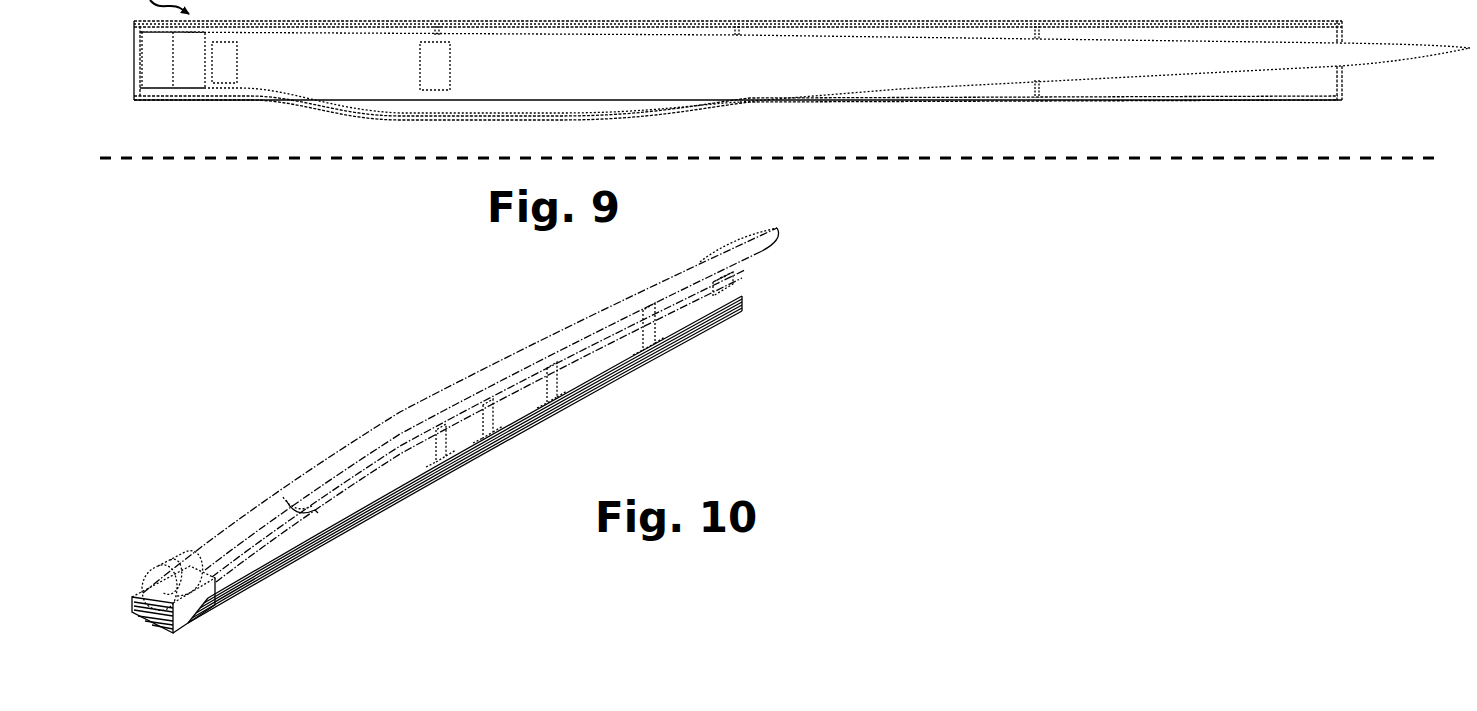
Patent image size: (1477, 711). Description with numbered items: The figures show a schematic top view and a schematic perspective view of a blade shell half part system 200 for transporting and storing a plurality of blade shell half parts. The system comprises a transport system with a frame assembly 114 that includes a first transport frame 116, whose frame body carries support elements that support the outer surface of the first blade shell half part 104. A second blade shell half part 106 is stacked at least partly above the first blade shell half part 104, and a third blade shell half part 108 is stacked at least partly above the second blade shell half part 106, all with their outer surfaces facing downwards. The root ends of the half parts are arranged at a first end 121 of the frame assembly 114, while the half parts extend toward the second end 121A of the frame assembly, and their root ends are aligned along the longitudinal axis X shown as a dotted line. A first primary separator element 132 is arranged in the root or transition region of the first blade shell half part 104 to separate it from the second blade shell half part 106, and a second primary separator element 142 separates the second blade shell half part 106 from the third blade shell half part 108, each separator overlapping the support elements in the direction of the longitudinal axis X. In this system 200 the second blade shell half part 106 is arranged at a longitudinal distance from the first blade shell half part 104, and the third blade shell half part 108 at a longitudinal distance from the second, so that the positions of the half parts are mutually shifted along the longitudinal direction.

In FIG. 9, the first end of frame assembly 121 is at (136, 62).
In FIG. 9, the second end of frame assembly 121A is at (1338, 88).
In FIG. 9, the frame assembly 114 is at (738, 13).
In FIG. 9, the third blade shell half part 108 is at (1328, 58).
In FIG. 10, the third blade shell half part 108 is at (422, 433).
In FIG. 9, the first transport frame 116 is at (1212, 98).
In FIG. 10, the first transport frame 116 is at (735, 302).
In FIG. 9, the longitudinal axis X is at (1400, 160).
In FIG. 10, the blade shell half part system 200 is at (318, 421).
In FIG. 10, the second blade shell half part 106 is at (760, 248).
In FIG. 10, the first blade shell half part 104 is at (745, 265).
In FIG. 10, the second primary separator element 142 is at (207, 573).
In FIG. 10, the first primary separator element 132 is at (218, 572).